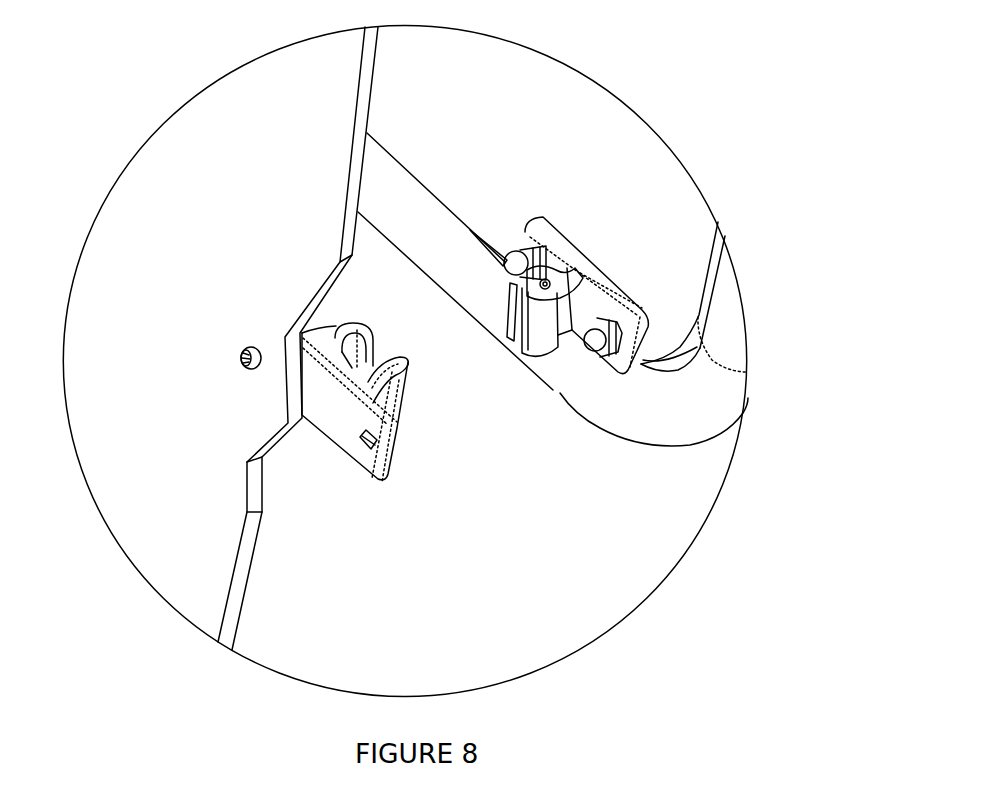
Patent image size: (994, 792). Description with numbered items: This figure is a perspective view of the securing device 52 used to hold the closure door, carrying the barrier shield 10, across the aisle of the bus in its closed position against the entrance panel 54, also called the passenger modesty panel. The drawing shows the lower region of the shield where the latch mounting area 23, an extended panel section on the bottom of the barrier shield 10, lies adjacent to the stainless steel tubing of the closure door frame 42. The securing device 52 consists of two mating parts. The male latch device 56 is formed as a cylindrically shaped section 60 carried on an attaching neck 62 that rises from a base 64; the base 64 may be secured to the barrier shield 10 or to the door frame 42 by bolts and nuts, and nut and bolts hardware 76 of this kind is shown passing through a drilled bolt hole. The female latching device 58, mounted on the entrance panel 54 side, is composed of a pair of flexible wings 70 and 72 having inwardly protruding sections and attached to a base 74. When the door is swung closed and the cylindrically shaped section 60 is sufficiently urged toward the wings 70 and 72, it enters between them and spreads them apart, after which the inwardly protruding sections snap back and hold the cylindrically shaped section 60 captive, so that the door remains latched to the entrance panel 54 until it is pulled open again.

The barrier shield 10 is at (458, 96).
The latch mounting area 23 is at (635, 223).
The closure door frame 42 is at (733, 395).
The securing device 52 is at (575, 100).
The entrance panel 54 is at (230, 220).
The male latch device 56 is at (559, 318).
The female latching device 58 is at (392, 439).
The cylindrically shaped section 60 is at (528, 287).
The attaching neck 62 is at (603, 275).
The base 64 is at (538, 222).
The flexible wing 70 is at (383, 330).
The flexible wing 72 is at (412, 363).
The base 74 is at (413, 448).
The nut and bolts hardware 76 is at (240, 358).